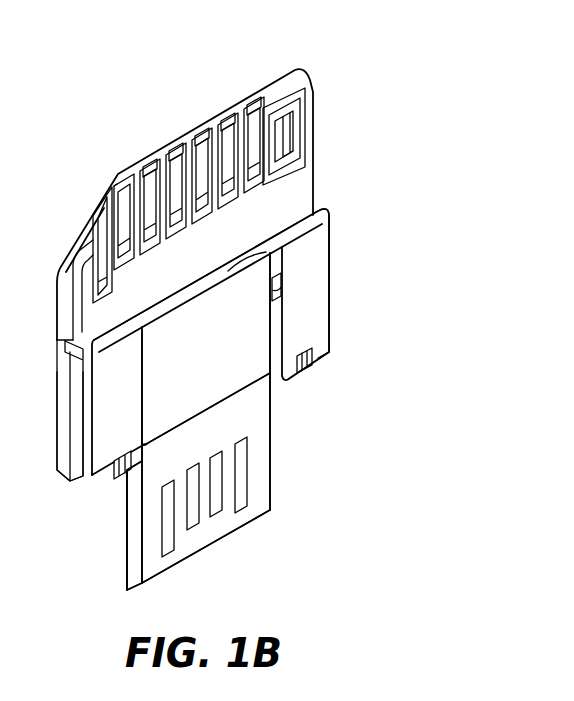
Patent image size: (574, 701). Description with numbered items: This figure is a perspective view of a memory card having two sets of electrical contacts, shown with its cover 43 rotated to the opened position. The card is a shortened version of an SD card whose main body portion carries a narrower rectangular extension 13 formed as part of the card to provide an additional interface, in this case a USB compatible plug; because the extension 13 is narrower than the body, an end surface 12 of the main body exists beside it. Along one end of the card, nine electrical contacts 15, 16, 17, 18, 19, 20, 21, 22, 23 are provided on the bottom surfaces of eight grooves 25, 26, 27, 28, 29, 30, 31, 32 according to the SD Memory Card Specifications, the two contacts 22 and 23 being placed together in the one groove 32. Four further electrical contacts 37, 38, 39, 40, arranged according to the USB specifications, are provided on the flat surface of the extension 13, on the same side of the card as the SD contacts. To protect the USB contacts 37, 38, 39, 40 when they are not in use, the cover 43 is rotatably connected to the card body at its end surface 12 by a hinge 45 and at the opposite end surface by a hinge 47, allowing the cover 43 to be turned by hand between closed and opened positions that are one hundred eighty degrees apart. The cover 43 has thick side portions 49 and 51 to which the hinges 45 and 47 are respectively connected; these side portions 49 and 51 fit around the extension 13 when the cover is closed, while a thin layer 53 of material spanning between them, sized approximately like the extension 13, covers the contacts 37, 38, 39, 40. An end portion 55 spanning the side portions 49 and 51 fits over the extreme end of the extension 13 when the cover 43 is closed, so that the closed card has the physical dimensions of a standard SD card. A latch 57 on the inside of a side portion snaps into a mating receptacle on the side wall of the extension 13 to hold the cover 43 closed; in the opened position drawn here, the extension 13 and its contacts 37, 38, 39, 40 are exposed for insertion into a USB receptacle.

The end surface 12 is at (80, 480).
The rectangular extension 13 is at (122, 580).
The electrical contact 15 is at (88, 302).
The electrical contact 16 is at (122, 188).
The electrical contact 17 is at (144, 178).
The electrical contact 18 is at (170, 163).
The electrical contact 19 is at (197, 148).
The electrical contact 20 is at (227, 138).
The electrical contact 21 is at (260, 100).
The electrical contact 22 is at (277, 160).
The electrical contact 23 is at (293, 145).
The groove 25 is at (100, 270).
The groove 26 is at (116, 195).
The groove 27 is at (150, 170).
The groove 28 is at (176, 157).
The groove 29 is at (203, 144).
The groove 30 is at (230, 134).
The groove 31 is at (254, 105).
The groove 32 is at (297, 118).
The electrical contact 37 is at (166, 548).
The electrical contact 38 is at (191, 522).
The electrical contact 39 is at (214, 510).
The electrical contact 40 is at (240, 502).
The cover 43 is at (336, 284).
The hinge 45 is at (128, 480).
The hinge 47 is at (306, 372).
The side portion 49 is at (118, 474).
The side portion 51 is at (322, 354).
The thin layer 53 is at (206, 348).
The end portion 55 is at (266, 252).
The latch 57 is at (280, 292).